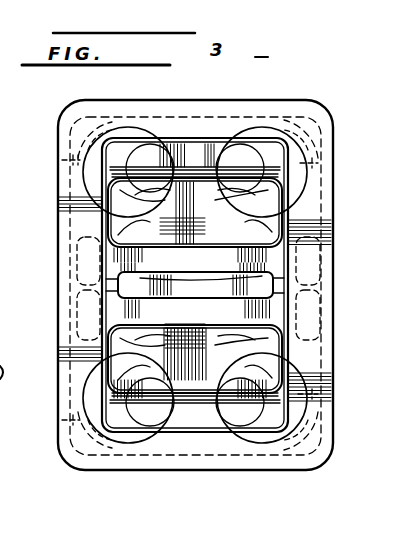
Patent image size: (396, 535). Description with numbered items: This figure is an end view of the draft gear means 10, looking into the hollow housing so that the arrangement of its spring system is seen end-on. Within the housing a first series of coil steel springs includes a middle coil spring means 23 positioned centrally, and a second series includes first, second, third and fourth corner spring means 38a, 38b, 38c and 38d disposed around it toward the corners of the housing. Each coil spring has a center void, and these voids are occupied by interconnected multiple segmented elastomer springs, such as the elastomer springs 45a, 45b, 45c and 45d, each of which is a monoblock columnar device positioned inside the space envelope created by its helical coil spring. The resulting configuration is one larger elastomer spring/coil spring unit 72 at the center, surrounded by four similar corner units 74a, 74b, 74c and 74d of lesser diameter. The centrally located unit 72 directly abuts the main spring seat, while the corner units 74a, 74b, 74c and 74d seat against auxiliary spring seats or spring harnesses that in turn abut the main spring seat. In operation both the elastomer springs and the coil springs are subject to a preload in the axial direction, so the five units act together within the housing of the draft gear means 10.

The draft gear means 10 is at (52, 270).
The middle coil spring means 23 is at (311, 341).
The first corner spring means 38a is at (102, 125).
The second corner spring means 38b is at (306, 135).
The third corner spring means 38c is at (336, 446).
The fourth corner spring means 38d is at (100, 458).
The elastomer spring 45a is at (62, 160).
The elastomer spring 45b is at (316, 163).
The elastomer spring 45c is at (313, 394).
The elastomer spring 45d is at (62, 420).
The elastomer spring/coil spring unit 72 is at (262, 288).
The corner unit 74a is at (125, 133).
The corner unit 74b is at (268, 145).
The corner unit 74c is at (266, 440).
The corner unit 74d is at (110, 430).